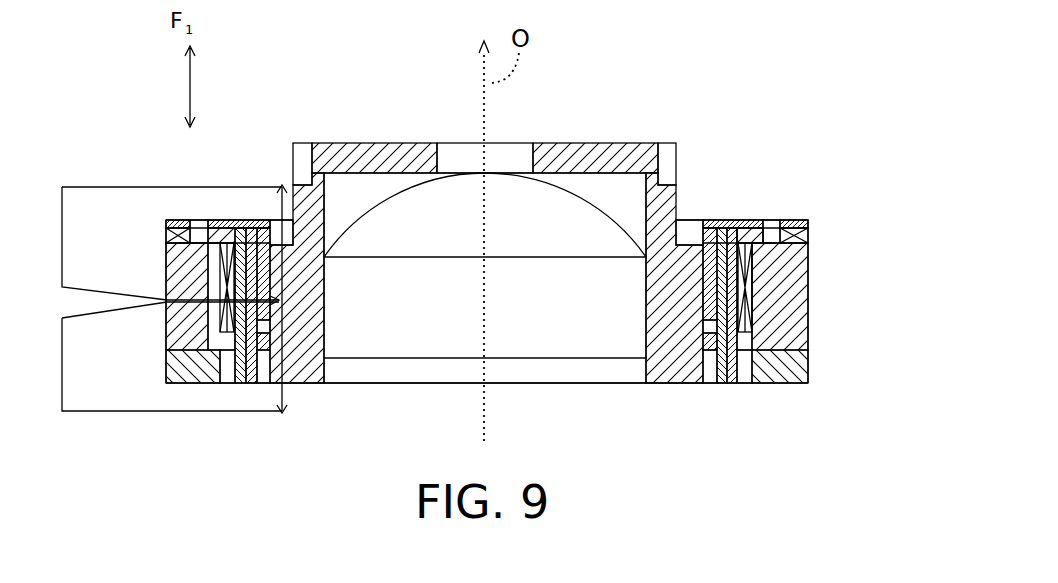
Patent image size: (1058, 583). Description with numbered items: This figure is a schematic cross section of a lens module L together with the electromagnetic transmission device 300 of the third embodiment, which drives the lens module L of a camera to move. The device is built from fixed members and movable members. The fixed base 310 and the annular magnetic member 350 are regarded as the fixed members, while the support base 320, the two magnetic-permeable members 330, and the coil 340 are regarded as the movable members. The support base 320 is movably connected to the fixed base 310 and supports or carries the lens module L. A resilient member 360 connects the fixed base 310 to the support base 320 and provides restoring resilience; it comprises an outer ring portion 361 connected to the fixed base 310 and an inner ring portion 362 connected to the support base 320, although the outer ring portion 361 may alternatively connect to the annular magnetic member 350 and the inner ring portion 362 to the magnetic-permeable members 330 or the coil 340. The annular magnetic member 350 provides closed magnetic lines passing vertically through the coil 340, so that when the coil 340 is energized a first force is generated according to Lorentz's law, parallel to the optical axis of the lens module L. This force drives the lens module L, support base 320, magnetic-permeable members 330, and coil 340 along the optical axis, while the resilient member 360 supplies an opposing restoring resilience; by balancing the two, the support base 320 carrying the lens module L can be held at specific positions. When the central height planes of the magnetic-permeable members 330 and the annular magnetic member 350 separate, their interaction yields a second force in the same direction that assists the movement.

The electromagnetic transmission device 300 is at (713, 205).
The fixed base 310 is at (775, 367).
The support base 320 is at (167, 245).
The magnetic-permeable members 330 is at (210, 340).
The coil 340 is at (225, 288).
The annular magnetic member 350 is at (808, 277).
The resilient member 360 is at (802, 213).
The outer ring portion 361 is at (810, 221).
The inner ring portion 362 is at (745, 221).
The lens module L is at (575, 150).